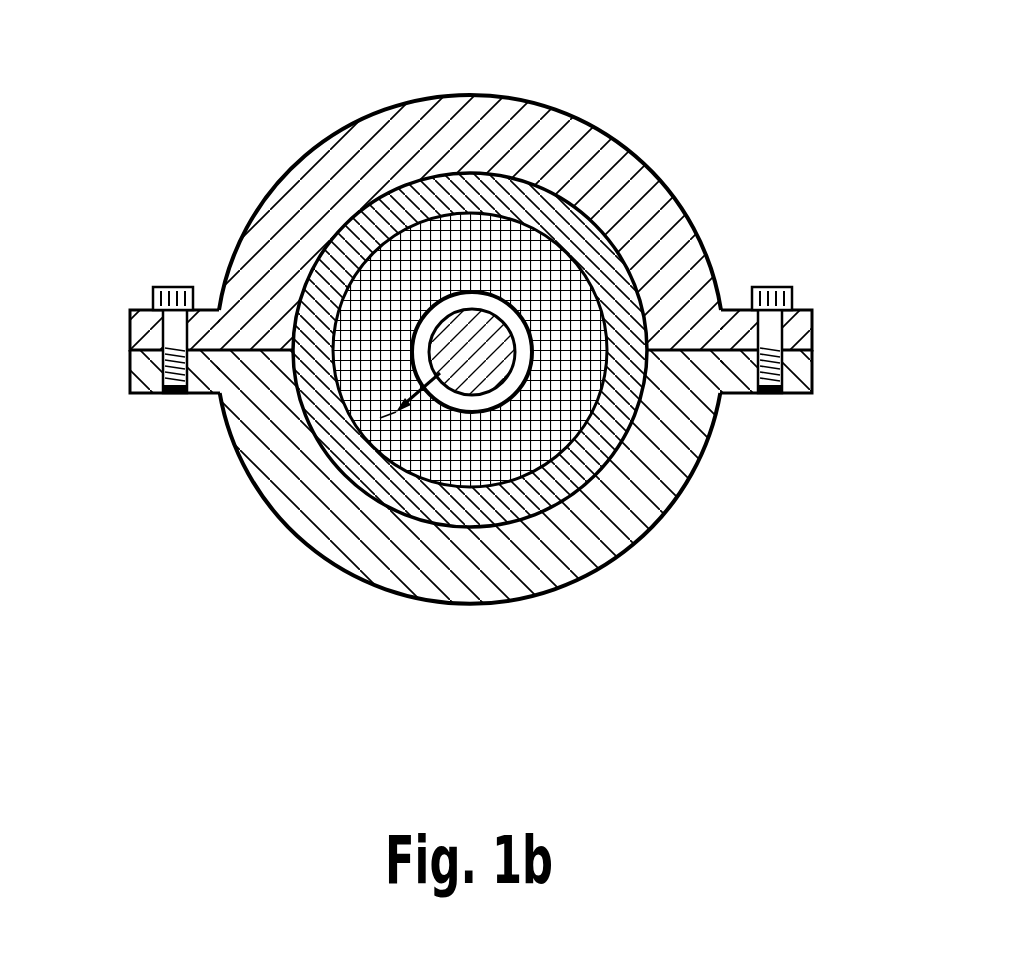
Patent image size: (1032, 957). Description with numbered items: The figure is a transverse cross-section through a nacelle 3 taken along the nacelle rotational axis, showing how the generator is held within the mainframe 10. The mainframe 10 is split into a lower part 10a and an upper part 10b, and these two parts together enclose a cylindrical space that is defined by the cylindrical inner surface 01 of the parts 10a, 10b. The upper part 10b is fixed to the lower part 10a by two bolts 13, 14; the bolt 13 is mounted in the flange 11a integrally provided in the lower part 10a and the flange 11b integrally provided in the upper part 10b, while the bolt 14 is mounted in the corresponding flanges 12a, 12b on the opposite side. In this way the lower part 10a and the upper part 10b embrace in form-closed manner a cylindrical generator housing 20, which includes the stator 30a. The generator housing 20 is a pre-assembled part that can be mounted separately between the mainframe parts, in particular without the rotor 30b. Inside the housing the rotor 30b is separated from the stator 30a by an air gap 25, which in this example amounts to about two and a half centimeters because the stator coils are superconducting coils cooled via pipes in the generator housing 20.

The nacelle 3 is at (473, 343).
The mainframe 10 is at (473, 318).
The lower part 10a is at (627, 513).
The upper part 10b is at (582, 158).
The flange 11a is at (148, 377).
The flange 11b is at (150, 328).
The flange 12a is at (800, 370).
The flange 12b is at (800, 335).
The bolt 13 is at (176, 300).
The bolt 14 is at (771, 300).
The generator housing 20 is at (500, 507).
The air gap 25 is at (445, 412).
The stator 30a is at (377, 363).
The rotor 30b is at (458, 353).
The cylindrical inner surface 01 is at (340, 477).